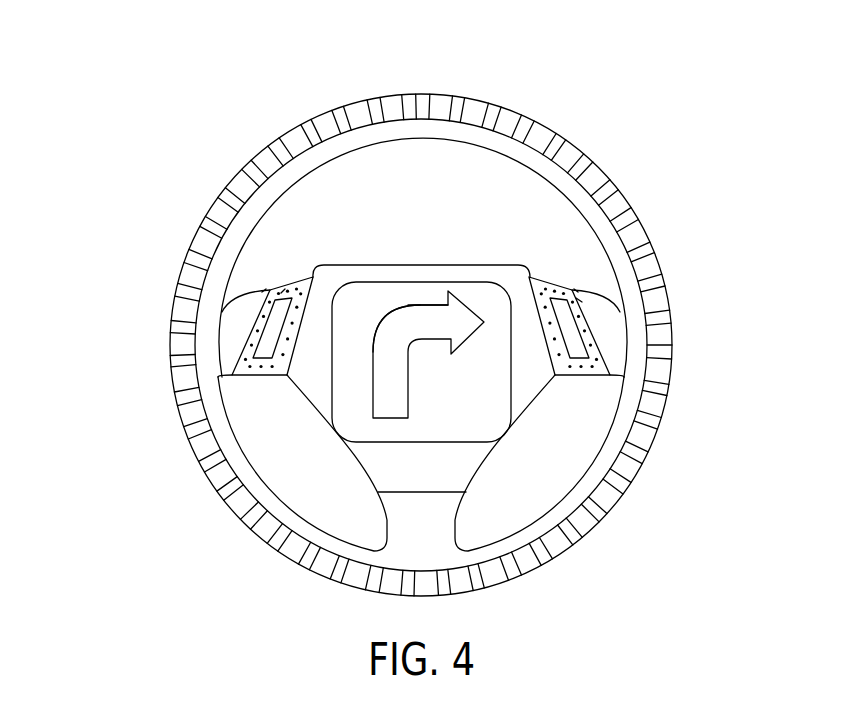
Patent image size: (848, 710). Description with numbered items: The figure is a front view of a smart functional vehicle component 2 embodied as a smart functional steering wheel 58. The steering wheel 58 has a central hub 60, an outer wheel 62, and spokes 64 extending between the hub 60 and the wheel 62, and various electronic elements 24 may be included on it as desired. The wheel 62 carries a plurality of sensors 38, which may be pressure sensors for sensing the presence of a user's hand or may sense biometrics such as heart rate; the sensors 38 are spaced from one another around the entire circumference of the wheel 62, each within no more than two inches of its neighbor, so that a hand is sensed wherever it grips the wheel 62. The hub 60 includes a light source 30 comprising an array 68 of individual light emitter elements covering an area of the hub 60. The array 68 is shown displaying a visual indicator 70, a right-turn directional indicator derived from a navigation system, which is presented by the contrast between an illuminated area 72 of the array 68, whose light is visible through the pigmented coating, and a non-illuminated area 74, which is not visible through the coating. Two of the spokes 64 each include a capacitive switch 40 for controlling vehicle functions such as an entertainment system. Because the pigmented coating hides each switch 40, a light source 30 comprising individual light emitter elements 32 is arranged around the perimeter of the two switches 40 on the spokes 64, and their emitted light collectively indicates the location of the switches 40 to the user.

The smart functional vehicle component 2 is at (399, 323).
The smart functional steering wheel 58 is at (399, 323).
The outer wheel 62 is at (628, 238).
The electronic elements 24 is at (414, 323).
The sensors 38 is at (578, 135).
The capacitive switch 40 is at (270, 337).
The light source 30 is at (451, 257).
The array of individual light emitter elements 68 is at (385, 283).
The individual light emitter elements 32 is at (258, 287).
The spokes 64 is at (257, 374).
The central hub 60 is at (457, 275).
The visual indicator 70 is at (480, 305).
The illuminated area 72 is at (432, 322).
The non-illuminated area 74 is at (360, 322).